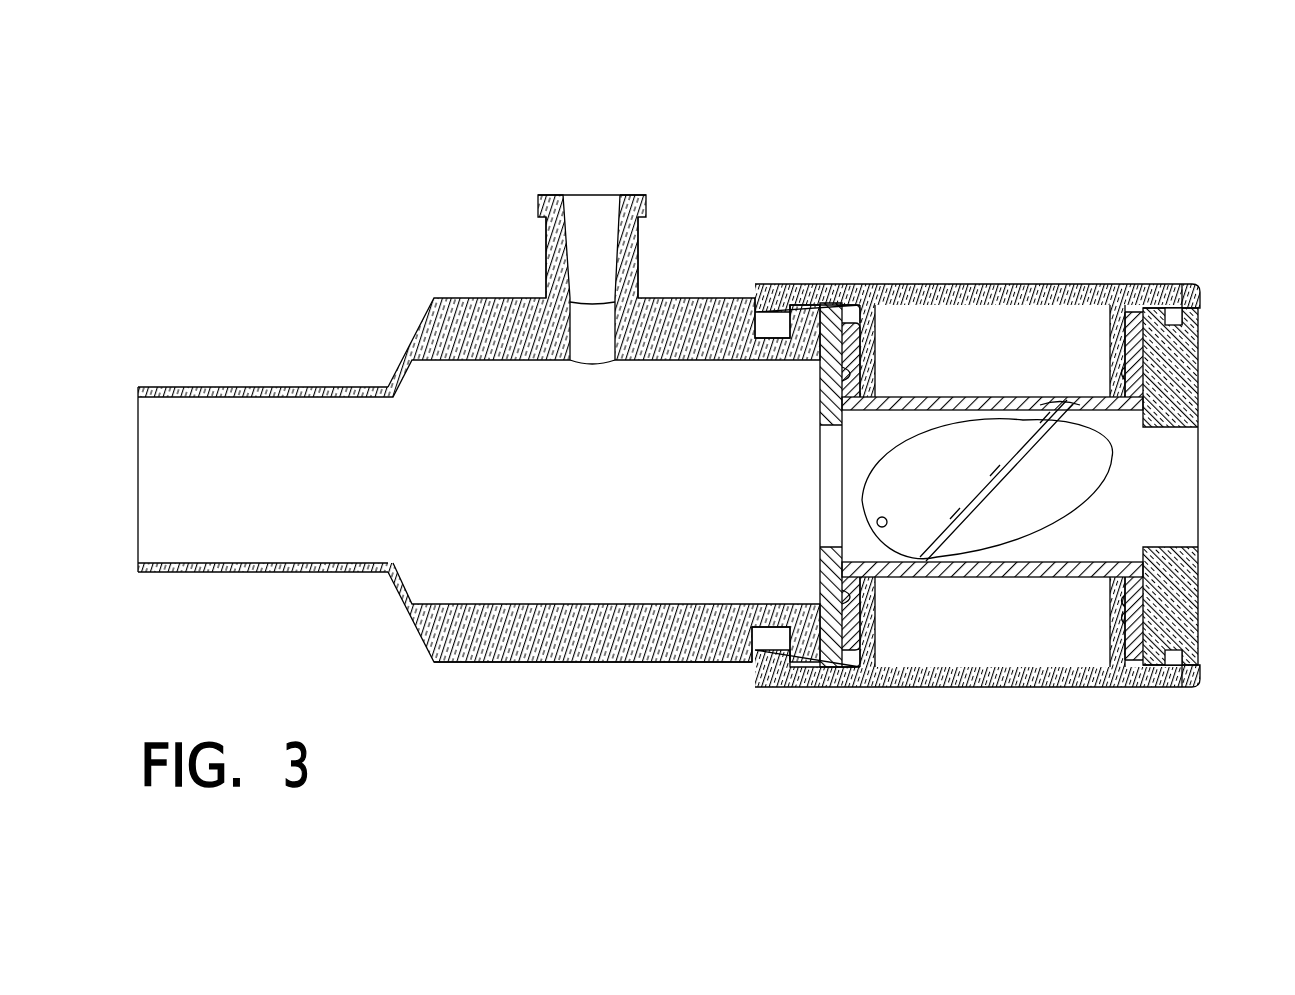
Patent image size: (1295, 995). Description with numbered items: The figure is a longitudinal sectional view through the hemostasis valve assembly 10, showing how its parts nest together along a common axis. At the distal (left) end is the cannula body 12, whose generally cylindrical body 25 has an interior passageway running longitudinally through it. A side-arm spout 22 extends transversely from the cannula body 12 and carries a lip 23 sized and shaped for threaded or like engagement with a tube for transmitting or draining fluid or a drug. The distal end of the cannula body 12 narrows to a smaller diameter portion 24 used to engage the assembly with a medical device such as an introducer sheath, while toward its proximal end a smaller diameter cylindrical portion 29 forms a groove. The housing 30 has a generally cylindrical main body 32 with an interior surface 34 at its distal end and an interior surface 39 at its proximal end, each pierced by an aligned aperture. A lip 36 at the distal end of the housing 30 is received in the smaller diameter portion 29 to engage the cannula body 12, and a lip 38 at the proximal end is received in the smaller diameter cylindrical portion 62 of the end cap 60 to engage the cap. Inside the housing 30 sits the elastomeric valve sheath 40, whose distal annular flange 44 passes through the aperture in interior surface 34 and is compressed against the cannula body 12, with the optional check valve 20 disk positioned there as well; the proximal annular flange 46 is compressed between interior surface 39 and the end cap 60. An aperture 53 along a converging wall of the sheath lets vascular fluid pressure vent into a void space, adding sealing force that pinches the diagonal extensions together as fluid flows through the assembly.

The hemostasis valve assembly 10 is at (838, 98).
The cannula body 12 is at (336, 243).
The check valve 20 is at (830, 305).
The side-arm spout 22 is at (547, 258).
The lip 23 is at (540, 207).
The smaller diameter portion 24 is at (265, 385).
The cylindrical body 25 is at (515, 663).
The smaller diameter cylindrical portion 29 is at (752, 660).
The housing 30 is at (966, 282).
The main body 32 is at (955, 668).
The interior surface 34 is at (856, 580).
The lip 36 is at (770, 328).
The lip 38 is at (1177, 328).
The interior surface 39 is at (1127, 623).
The elastomeric valve sheath 40 is at (954, 384).
The annular flange 44 is at (852, 652).
The annular flange 46 is at (1130, 660).
The aperture 53 is at (876, 524).
The end cap 60 is at (1206, 309).
The smaller diameter cylindrical portion 62 is at (1173, 687).